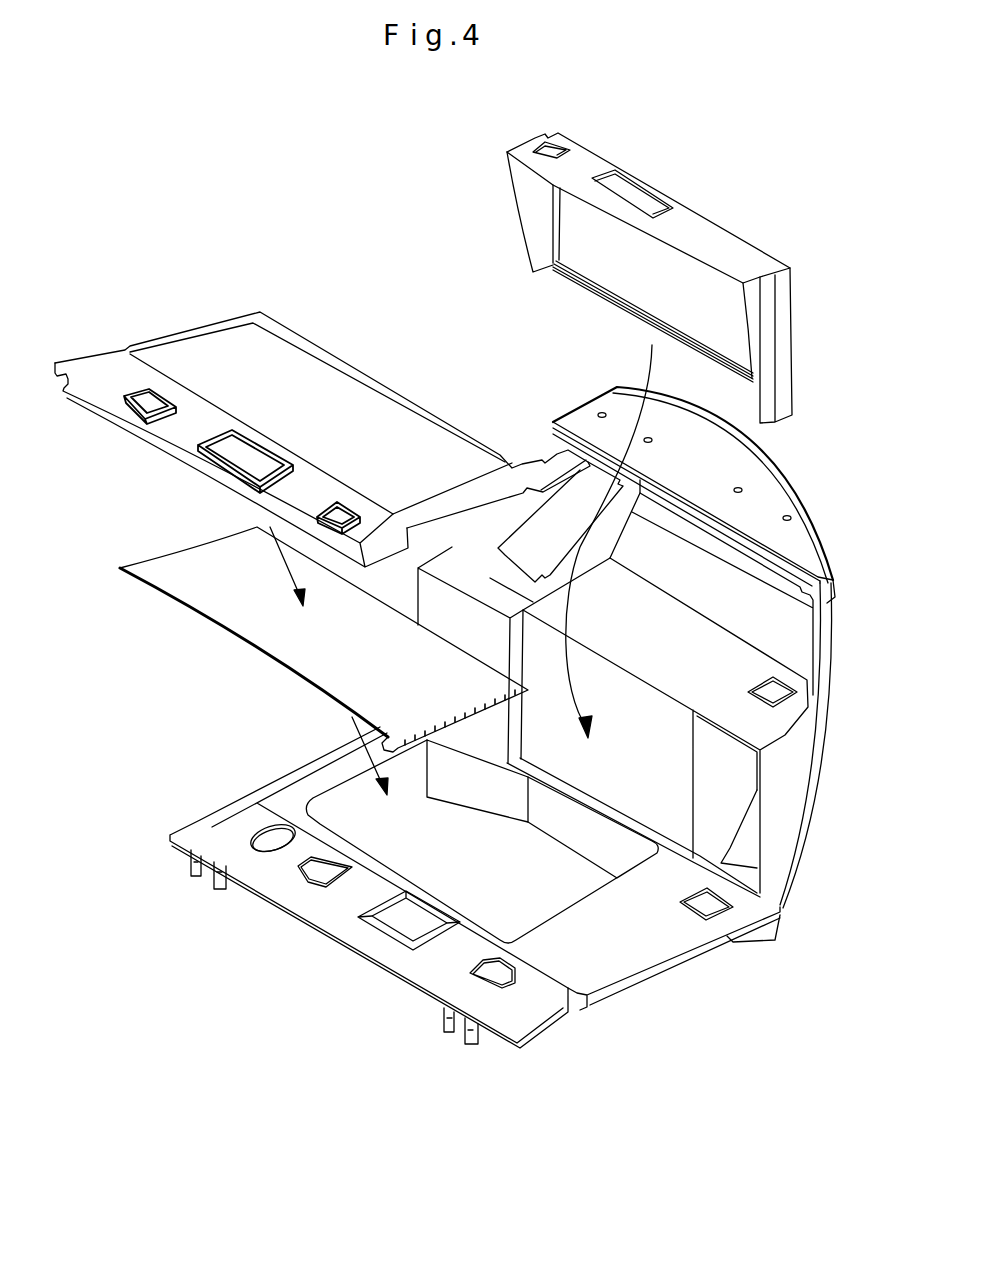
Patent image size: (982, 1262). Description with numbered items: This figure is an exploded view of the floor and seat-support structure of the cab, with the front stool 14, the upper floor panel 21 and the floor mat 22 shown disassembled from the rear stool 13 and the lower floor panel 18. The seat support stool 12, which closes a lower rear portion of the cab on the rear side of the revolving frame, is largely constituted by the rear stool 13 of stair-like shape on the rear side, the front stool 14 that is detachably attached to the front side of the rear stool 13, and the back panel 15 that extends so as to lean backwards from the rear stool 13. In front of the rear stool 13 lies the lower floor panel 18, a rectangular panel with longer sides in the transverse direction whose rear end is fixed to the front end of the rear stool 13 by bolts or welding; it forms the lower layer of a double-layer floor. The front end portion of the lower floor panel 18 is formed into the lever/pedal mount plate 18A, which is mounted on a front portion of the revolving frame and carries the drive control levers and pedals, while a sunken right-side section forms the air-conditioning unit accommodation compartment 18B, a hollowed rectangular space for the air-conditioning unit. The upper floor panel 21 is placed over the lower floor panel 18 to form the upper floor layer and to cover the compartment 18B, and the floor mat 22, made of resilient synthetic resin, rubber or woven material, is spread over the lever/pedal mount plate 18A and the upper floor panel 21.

The seat support stool 12 is at (798, 752).
The rear stool 13 is at (773, 827).
The front stool 14 is at (697, 228).
The back panel 15 is at (710, 573).
The lower floor panel 18 is at (650, 950).
The lever/pedal mount plate 18A is at (350, 892).
The air-conditioning unit accommodation compartment 18B is at (460, 903).
The upper floor panel 21 is at (257, 623).
The floor mat 22 is at (287, 352).